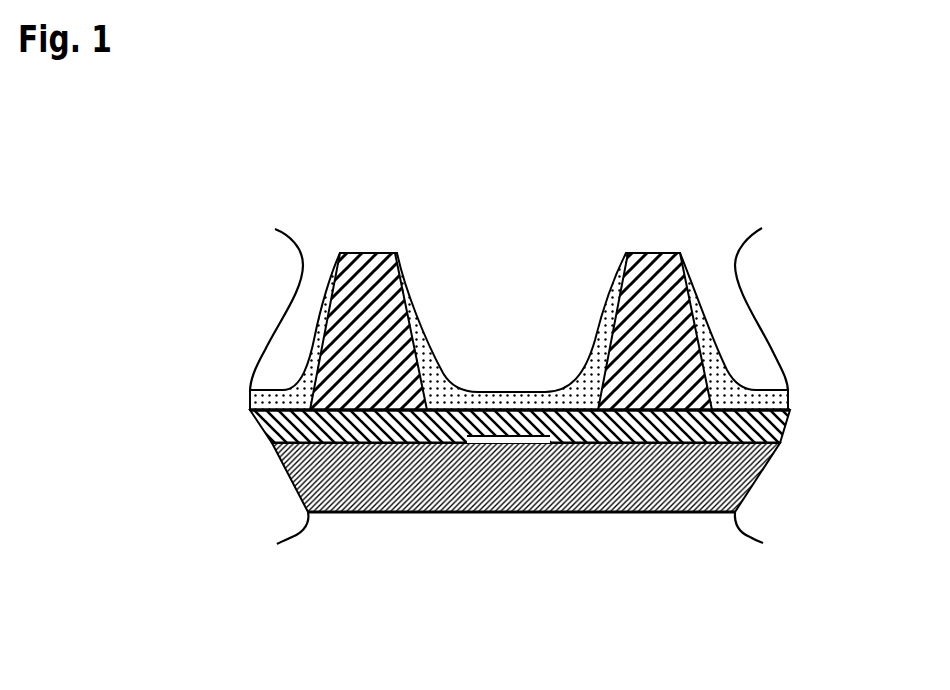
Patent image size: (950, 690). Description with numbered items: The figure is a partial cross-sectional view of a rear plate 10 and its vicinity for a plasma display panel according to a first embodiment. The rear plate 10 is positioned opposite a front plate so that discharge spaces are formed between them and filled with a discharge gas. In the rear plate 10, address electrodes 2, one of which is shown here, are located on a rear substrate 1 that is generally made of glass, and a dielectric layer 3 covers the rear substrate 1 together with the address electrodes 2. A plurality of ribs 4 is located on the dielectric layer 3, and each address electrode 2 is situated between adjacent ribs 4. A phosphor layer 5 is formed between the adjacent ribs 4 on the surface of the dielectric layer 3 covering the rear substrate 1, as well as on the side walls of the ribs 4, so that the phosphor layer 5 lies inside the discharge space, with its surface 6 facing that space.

The rear substrate 1 is at (615, 497).
The address electrode 2 is at (505, 440).
The dielectric layer 3 is at (400, 430).
The rib 4 is at (653, 270).
The phosphor layer 5 is at (443, 397).
The surface of the phosphor layer 6 is at (507, 390).
The rear plate 10 is at (552, 420).